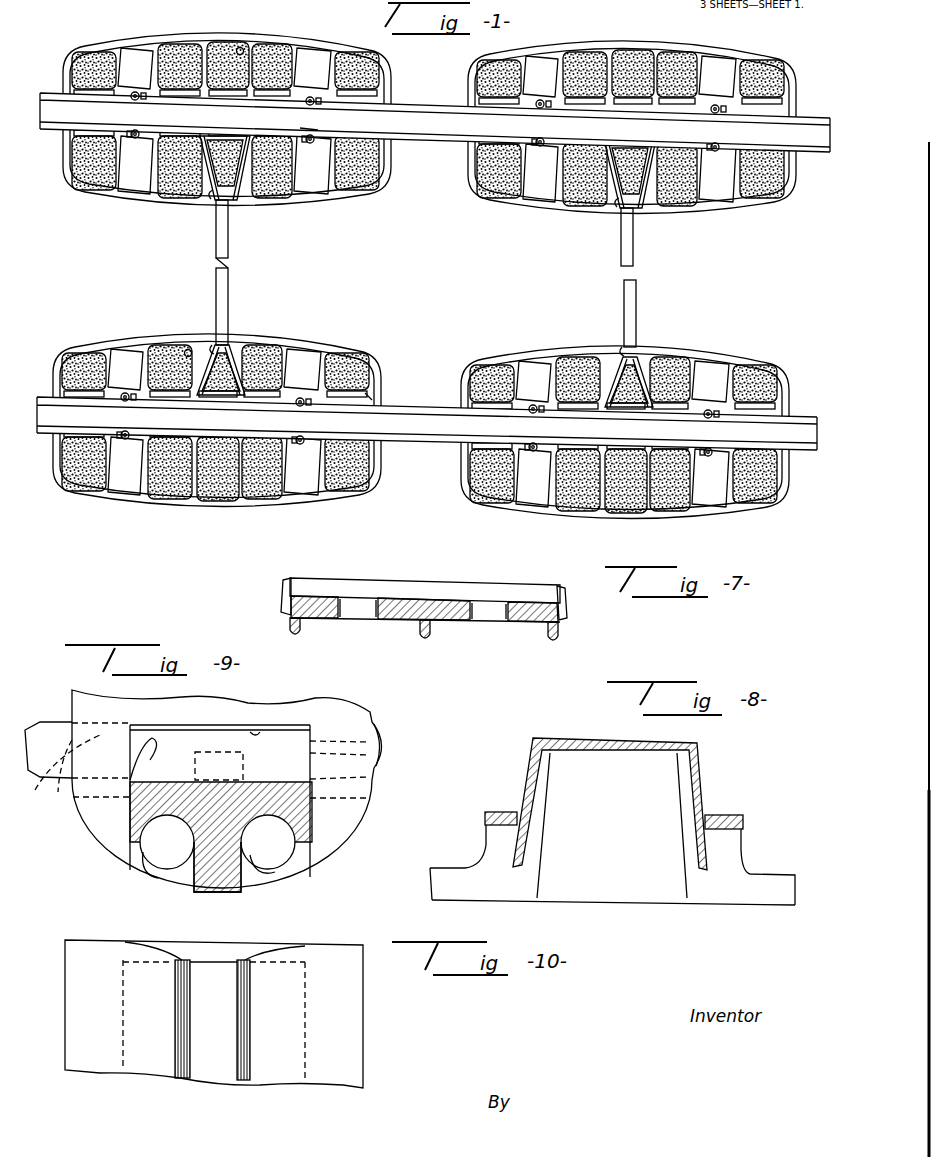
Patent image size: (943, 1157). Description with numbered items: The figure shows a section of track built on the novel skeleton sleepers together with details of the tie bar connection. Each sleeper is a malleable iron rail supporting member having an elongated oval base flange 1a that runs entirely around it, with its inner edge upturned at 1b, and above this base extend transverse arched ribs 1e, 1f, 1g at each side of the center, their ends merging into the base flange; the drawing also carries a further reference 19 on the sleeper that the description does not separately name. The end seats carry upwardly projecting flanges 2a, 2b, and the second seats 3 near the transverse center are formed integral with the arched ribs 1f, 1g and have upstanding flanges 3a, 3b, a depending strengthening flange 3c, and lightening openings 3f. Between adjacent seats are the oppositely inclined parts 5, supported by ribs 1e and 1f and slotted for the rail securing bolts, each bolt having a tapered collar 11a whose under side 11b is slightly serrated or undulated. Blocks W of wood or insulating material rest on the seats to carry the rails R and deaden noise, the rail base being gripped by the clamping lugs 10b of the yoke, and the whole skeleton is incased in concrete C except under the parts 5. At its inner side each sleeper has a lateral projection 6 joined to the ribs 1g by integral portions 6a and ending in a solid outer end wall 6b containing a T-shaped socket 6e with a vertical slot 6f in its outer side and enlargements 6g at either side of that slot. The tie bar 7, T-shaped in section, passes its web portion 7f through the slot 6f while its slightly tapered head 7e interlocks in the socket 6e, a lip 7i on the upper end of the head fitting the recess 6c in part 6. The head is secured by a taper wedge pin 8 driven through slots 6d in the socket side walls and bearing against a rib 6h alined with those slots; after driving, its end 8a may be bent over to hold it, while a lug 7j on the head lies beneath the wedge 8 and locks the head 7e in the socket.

In FIG. 1, the block W is at (70, 182).
In FIG. 1, the base flange 1a is at (262, 36).
In FIG. 1, the upturned inner edge of base flange 1b is at (314, 50).
In FIG. 1, the transverse arched rib 1e is at (100, 62).
In FIG. 1, the transverse arched rib 1f is at (135, 70).
In FIG. 1, the transverse arched rib 1g is at (241, 46).
In FIG. 1, the flange 19 is at (188, 349).
In FIG. 8, the flange 19 is at (495, 812).
In FIG. 1, the upwardly projecting flange of seat 2 2a is at (70, 93).
In FIG. 1, the upwardly projecting flange of seat 2 2b is at (246, 137).
In FIG. 1, the rail R is at (447, 138).
In FIG. 1, the concrete C is at (372, 192).
In FIG. 7, the second seat 3 is at (347, 600).
In FIG. 1, the upstanding flange of seat 3 3a is at (308, 131).
In FIG. 7, the upstanding flange of seat 3 3a is at (442, 589).
In FIG. 1, the upstanding flange of seat 3 3b is at (247, 131).
In FIG. 7, the depending strengthening flange of seat 3 3c is at (301, 632).
In FIG. 7, the opening in seat 3 3f is at (366, 614).
In FIG. 1, the inclined part 5 is at (122, 445).
In FIG. 1, the lateral projection 6 is at (234, 197).
In FIG. 9, the lateral projection 6 is at (320, 706).
In FIG. 8, the lateral projection 6 is at (592, 740).
In FIG. 8, the integral portion 6a is at (690, 790).
In FIG. 8, the solid outer end wall 6b is at (613, 870).
In FIG. 9, the recess 6c is at (150, 862).
In FIG. 10, the recess 6c is at (146, 949).
In FIG. 9, the slot in socket side wall 6d is at (384, 758).
In FIG. 9, the T-shaped socket 6e is at (133, 818).
In FIG. 9, the vertical slot 6f is at (220, 895).
In FIG. 10, the vertical slot 6f is at (211, 1062).
In FIG. 9, the enlargement of socket 6g is at (165, 870).
In FIG. 10, the enlargement of socket 6g is at (166, 1056).
In FIG. 9, the rib of socket 6h is at (260, 728).
In FIG. 1, the tie bar 7 is at (230, 288).
In FIG. 9, the head of tie bar 7e is at (130, 823).
In FIG. 9, the web portion of tie bar 7f is at (250, 892).
In FIG. 1, the lip 7i is at (230, 210).
In FIG. 9, the lug 7j is at (246, 770).
In FIG. 1, the taper wedge pin 8 is at (208, 200).
In FIG. 9, the taper wedge pin 8 is at (176, 750).
In FIG. 9, the end of wedge pin 8a is at (386, 735).
In FIG. 1, the clamping lug 10b is at (727, 100).
In FIG. 1, the collar of bolt 11a is at (125, 137).
In FIG. 1, the serrated under side of collar 11b is at (372, 397).